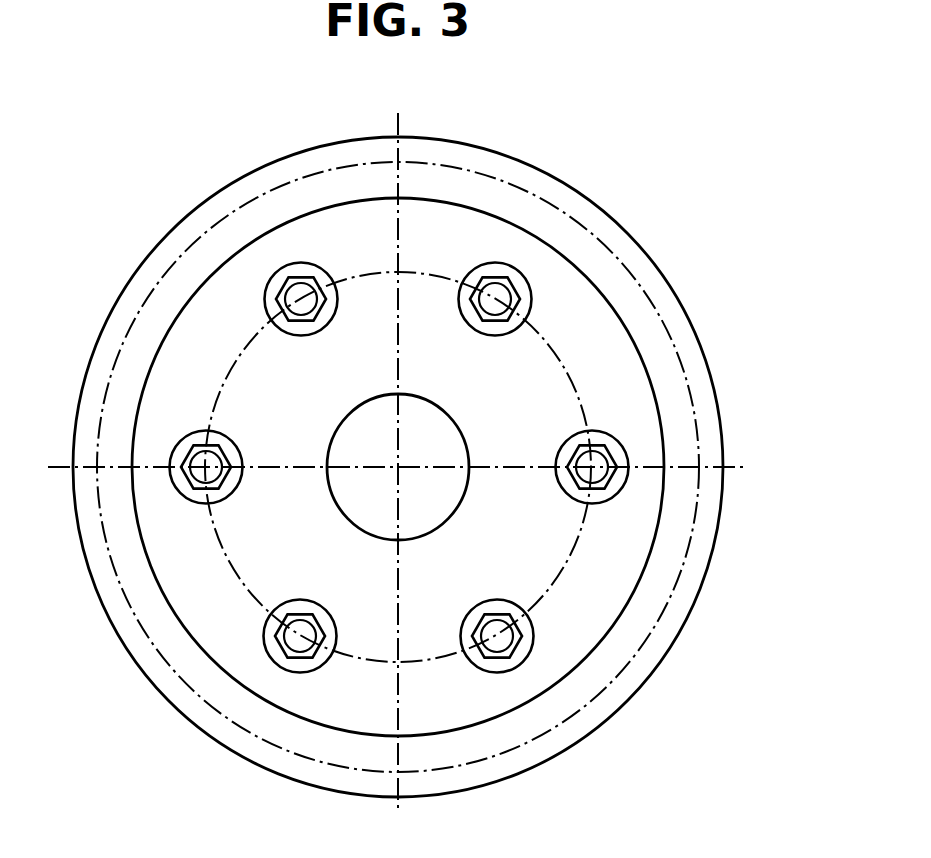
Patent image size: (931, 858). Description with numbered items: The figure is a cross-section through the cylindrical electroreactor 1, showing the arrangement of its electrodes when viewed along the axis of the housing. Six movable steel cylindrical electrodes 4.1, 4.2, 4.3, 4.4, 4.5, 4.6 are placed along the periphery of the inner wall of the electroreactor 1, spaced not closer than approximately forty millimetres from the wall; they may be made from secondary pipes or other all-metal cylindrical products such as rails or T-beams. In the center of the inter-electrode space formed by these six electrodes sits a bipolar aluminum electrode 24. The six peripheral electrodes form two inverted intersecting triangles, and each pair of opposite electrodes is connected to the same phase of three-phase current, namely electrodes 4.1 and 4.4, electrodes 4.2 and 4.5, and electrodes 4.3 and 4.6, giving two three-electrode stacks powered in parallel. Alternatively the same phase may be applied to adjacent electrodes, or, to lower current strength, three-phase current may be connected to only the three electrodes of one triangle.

The cylindrical electroreactor 1 is at (603, 320).
The bipolar aluminum electrode 24 is at (366, 434).
The steel cylindrical electrode 4.1 is at (303, 293).
The steel cylindrical electrode 4.2 is at (497, 293).
The steel cylindrical electrode 4.3 is at (598, 470).
The steel cylindrical electrode 4.4 is at (500, 642).
The steel cylindrical electrode 4.5 is at (295, 642).
The steel cylindrical electrode 4.6 is at (203, 466).